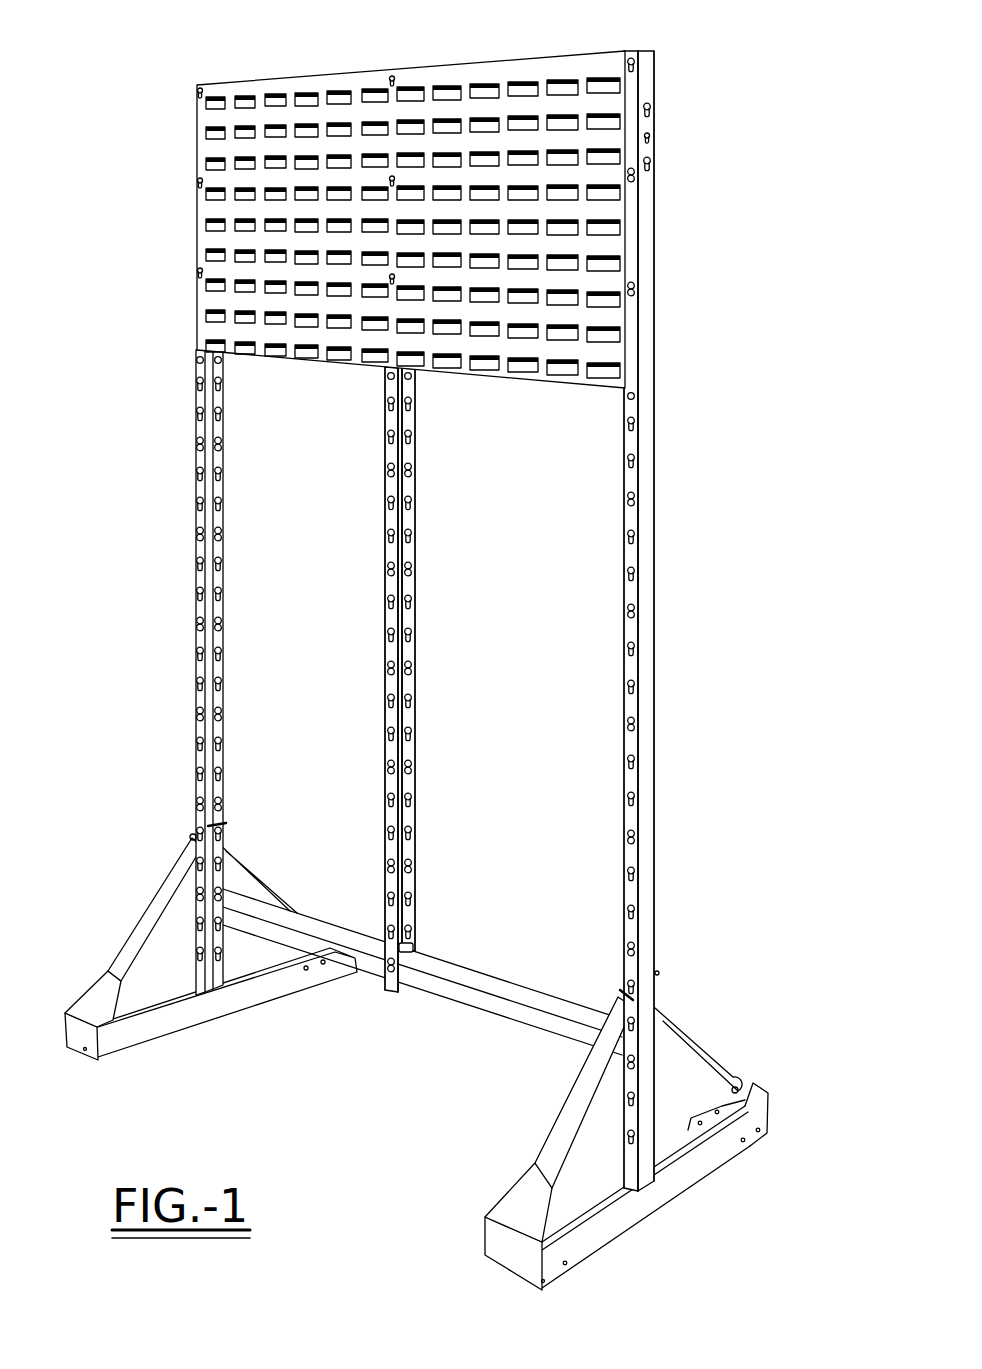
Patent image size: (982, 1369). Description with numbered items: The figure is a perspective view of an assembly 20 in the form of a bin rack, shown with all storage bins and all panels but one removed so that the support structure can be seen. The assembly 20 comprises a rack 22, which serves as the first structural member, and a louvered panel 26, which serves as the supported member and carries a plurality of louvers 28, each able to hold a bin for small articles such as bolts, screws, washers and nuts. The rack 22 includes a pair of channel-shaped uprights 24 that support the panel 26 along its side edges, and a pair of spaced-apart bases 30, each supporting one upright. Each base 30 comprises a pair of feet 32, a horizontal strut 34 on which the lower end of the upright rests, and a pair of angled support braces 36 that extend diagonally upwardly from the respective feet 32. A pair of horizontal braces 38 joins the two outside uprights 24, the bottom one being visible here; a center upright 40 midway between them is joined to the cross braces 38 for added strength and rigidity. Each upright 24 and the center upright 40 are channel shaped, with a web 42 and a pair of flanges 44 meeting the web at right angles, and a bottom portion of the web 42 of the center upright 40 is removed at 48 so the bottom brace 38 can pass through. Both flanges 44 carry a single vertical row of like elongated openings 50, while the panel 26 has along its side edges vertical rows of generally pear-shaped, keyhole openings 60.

The assembly 20 is at (433, 658).
The rack 22 is at (187, 831).
The channel-shaped uprights 24 is at (195, 452).
The louvered panel 26 is at (336, 194).
The louvers 28 is at (445, 95).
The bases 30 is at (447, 1132).
The feet 32 is at (125, 1047).
The horizontal strut 34 is at (187, 1013).
The angled support braces 36 is at (252, 860).
The horizontal braces 38 is at (447, 1000).
The center upright 40 is at (385, 517).
The web 42 is at (648, 705).
The flanges 44 is at (385, 698).
The removed bottom portion of web 48 is at (412, 950).
The elongated openings 50 is at (660, 166).
The pear-shaped openings 60 is at (640, 290).